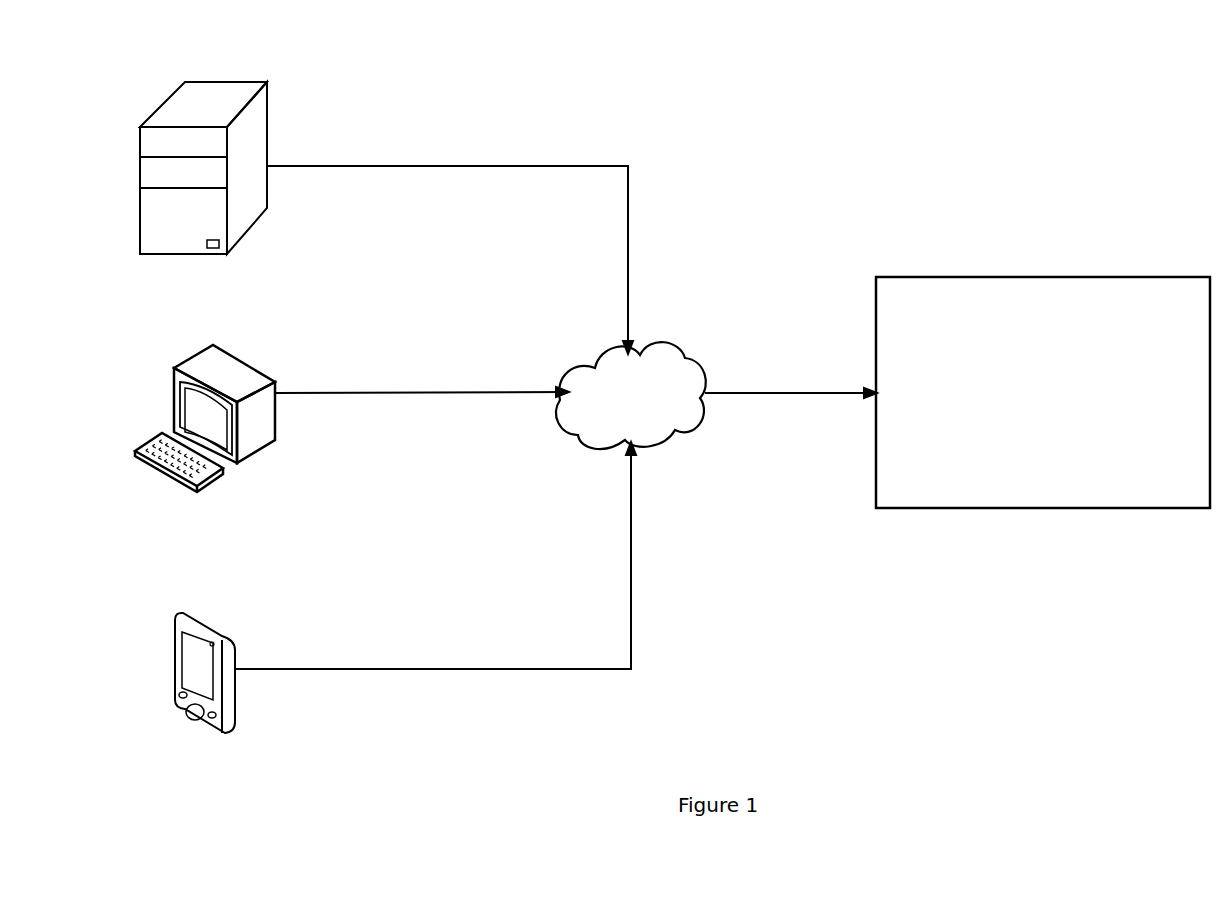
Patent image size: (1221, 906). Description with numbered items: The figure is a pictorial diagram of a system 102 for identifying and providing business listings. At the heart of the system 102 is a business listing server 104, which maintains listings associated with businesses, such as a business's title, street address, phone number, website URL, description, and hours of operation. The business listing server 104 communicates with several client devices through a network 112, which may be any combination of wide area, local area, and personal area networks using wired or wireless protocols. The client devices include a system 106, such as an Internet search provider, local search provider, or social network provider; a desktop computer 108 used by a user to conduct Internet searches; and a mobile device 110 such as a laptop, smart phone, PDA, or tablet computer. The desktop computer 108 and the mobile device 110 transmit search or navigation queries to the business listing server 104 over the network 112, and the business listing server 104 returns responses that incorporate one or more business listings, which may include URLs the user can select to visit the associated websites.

The system 102 is at (912, 97).
The business listing server 104 is at (1043, 392).
The system 106 is at (246, 80).
The desktop computer 108 is at (247, 360).
The mobile device 110 is at (217, 618).
The network 112 is at (631, 395).